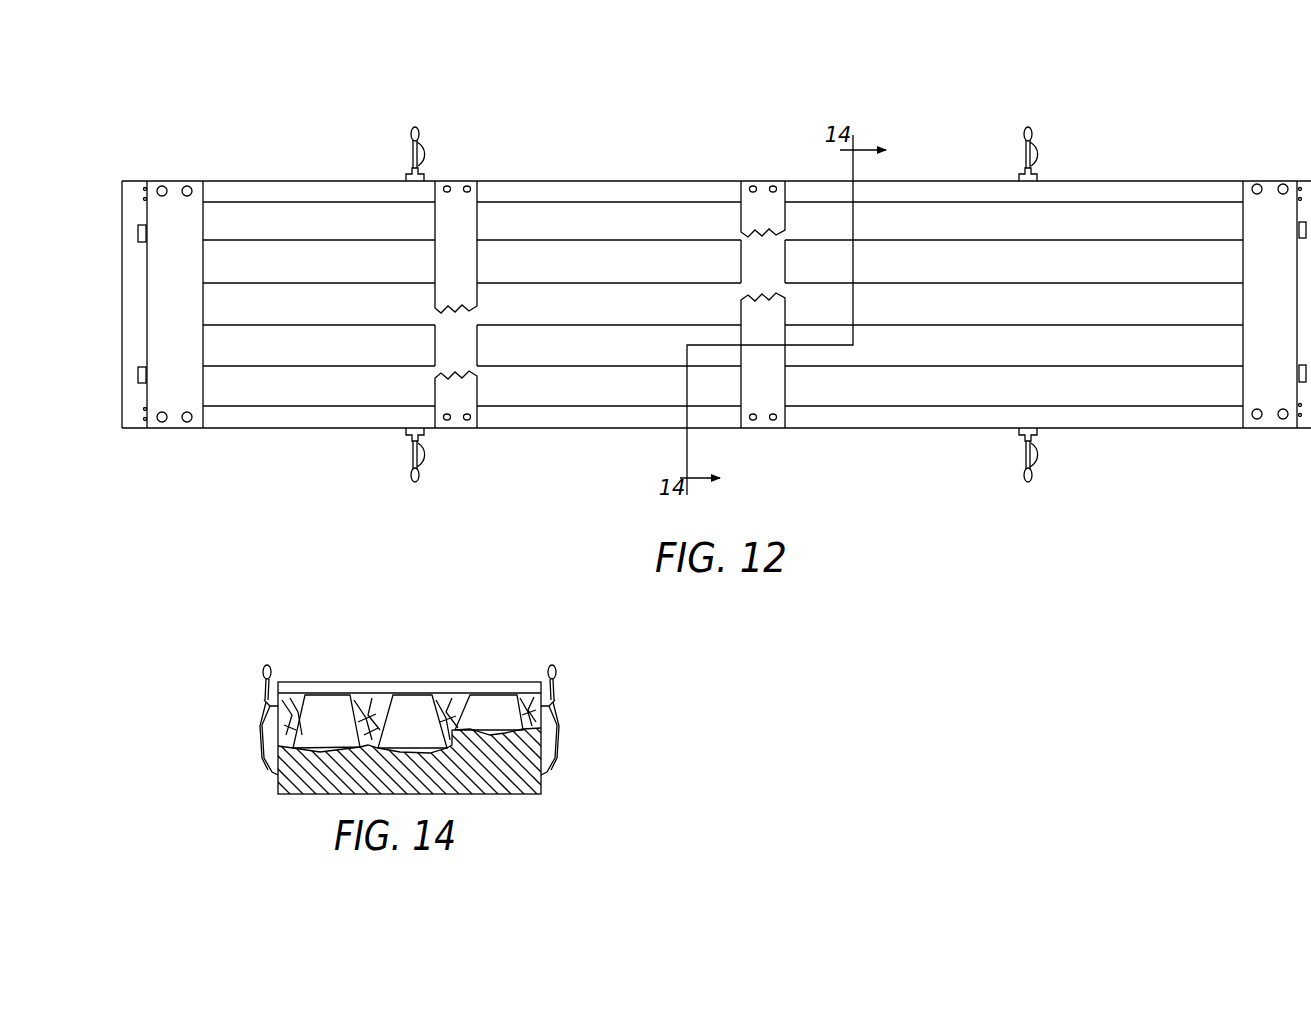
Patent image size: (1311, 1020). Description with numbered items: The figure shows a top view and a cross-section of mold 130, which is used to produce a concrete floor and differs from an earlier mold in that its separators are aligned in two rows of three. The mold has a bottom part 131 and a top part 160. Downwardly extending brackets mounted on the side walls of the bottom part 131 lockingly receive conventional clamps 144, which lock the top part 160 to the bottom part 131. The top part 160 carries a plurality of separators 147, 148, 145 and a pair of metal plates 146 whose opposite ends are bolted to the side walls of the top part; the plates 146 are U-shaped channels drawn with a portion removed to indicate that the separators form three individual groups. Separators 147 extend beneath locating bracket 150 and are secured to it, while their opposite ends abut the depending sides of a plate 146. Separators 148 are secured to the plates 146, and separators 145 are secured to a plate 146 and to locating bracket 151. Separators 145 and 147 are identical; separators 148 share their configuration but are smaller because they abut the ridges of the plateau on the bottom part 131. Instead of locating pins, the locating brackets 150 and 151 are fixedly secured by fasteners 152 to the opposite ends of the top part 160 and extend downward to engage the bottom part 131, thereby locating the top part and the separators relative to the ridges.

In FIG. 14, the mold 130 is at (628, 697).
In FIG. 14, the bottom part 131 is at (276, 777).
In FIG. 12, the clamps 144 is at (418, 130).
In FIG. 12, the separators 145 is at (1100, 253).
In FIG. 12, the metal plates 146 is at (786, 218).
In FIG. 12, the separators 147 is at (270, 252).
In FIG. 12, the separators 148 is at (541, 252).
In FIG. 12, the locating bracket 150 is at (173, 189).
In FIG. 12, the locating bracket 151 is at (1275, 198).
In FIG. 12, the fasteners 152 is at (162, 424).
In FIG. 12, the top part 160 is at (695, 181).
In FIG. 14, the top part 160 is at (538, 719).